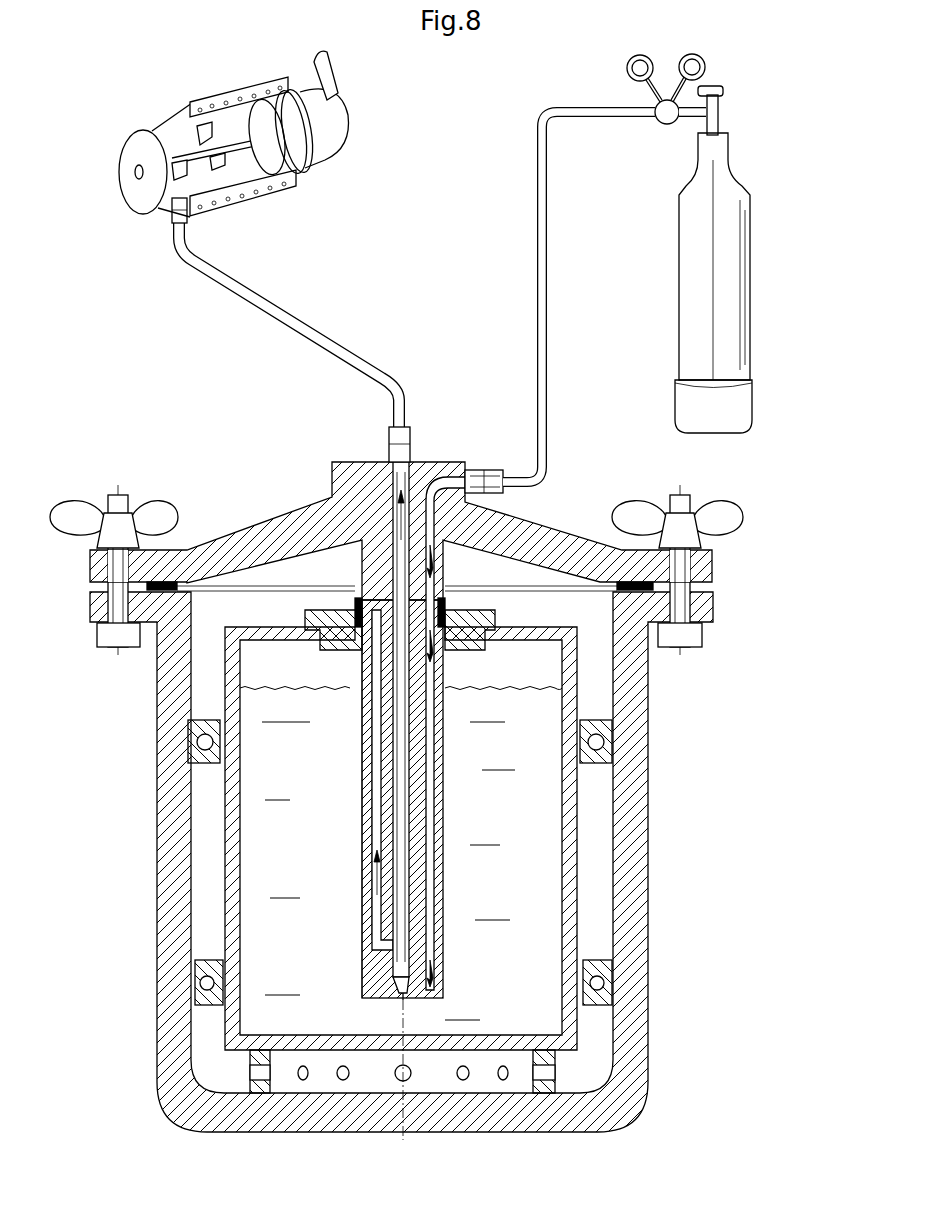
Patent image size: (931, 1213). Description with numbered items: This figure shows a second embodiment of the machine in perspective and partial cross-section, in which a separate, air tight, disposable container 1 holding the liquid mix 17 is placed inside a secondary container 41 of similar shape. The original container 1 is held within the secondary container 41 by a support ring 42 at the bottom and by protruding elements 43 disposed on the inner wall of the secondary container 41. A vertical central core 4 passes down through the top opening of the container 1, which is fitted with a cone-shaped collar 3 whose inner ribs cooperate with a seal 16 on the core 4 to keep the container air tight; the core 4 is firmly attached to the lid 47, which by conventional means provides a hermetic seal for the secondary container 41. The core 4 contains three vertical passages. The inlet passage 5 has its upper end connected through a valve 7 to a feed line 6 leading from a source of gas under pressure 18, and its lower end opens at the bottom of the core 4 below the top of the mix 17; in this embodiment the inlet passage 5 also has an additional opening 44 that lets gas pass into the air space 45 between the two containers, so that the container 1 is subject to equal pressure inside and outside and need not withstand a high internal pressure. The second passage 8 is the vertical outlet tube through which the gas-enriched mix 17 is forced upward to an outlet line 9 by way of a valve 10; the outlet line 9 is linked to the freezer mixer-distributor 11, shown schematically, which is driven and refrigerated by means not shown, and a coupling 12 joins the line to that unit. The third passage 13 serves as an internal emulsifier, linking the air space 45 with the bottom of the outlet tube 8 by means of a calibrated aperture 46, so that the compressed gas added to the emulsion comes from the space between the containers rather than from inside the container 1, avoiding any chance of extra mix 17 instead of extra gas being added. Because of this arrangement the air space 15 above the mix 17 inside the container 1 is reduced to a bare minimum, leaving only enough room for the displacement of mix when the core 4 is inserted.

The container 1 is at (226, 833).
The collar 3 is at (490, 612).
The central core 4 is at (368, 882).
The inlet passage 5 is at (443, 812).
The feed line 6 is at (537, 262).
The valve 7 is at (482, 470).
The second passage 8 is at (393, 740).
The outlet line 9 is at (253, 303).
The valve 10 is at (390, 438).
The freezer mixer-distributor 11 is at (166, 124).
The hose coupling 12 is at (172, 214).
The third passage 13 is at (380, 790).
The air space 15 is at (507, 681).
The seal 16 is at (332, 600).
The mix 17 is at (497, 901).
The source of gas under pressure 18 is at (692, 275).
The secondary container 41 is at (172, 895).
The support ring 42 is at (250, 1058).
The protruding elements 43 is at (190, 758).
The additional opening 44 is at (440, 578).
The air space 45 is at (196, 624).
The calibrated aperture 46 is at (345, 572).
The lid 47 is at (260, 522).